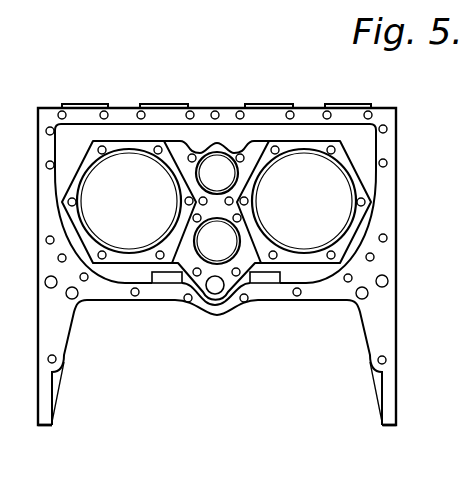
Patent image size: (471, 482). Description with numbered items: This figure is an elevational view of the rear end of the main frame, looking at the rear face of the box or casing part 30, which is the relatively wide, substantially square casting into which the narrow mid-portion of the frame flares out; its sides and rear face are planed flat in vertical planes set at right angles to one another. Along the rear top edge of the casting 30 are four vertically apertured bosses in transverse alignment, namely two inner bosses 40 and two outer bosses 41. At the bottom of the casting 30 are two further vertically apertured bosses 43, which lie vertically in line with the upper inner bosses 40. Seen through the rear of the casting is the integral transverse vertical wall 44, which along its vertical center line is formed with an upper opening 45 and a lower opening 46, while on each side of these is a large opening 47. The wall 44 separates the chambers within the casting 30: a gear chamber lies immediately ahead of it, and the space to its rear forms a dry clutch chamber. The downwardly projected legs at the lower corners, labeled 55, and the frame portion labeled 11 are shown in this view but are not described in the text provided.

The cylinder block end wall 11 is at (430, 186).
The box or casing part 30 is at (388, 204).
The inner bosses 40 is at (180, 103).
The outer bosses 41 is at (96, 103).
The vertically apertured bosses 43 is at (268, 273).
The transverse vertical wall 44 is at (357, 146).
The upper opening 45 is at (236, 172).
The lower opening 46 is at (238, 243).
The large opening 47 is at (180, 202).
The leg 55 is at (42, 398).